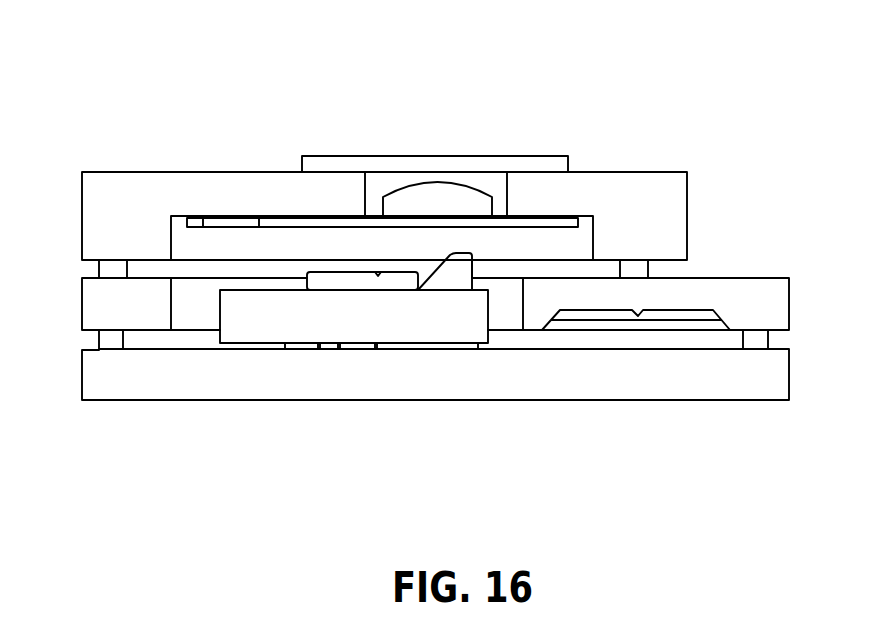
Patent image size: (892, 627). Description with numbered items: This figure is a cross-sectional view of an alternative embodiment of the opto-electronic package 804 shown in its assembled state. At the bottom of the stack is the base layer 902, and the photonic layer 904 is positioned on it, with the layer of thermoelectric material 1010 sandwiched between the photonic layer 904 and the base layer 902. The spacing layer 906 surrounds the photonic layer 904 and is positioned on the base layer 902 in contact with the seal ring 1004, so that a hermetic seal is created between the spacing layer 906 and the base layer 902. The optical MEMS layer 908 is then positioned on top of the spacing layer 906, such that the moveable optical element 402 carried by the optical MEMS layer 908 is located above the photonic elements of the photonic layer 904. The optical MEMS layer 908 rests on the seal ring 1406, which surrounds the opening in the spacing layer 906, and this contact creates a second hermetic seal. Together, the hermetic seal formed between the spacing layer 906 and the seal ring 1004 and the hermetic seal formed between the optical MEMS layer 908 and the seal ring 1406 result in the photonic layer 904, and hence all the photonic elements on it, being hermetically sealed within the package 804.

The opto-electronic package 804 is at (625, 93).
The optical MEMS layer 908 is at (686, 171).
The moveable optical element 402 is at (442, 205).
The seal ring 1406 is at (98, 268).
The spacing layer 906 is at (788, 277).
The photonic layer 904 is at (270, 326).
The layer of thermoelectric material 1010 is at (380, 346).
The seal ring 1004 is at (98, 338).
The base layer 902 is at (81, 399).